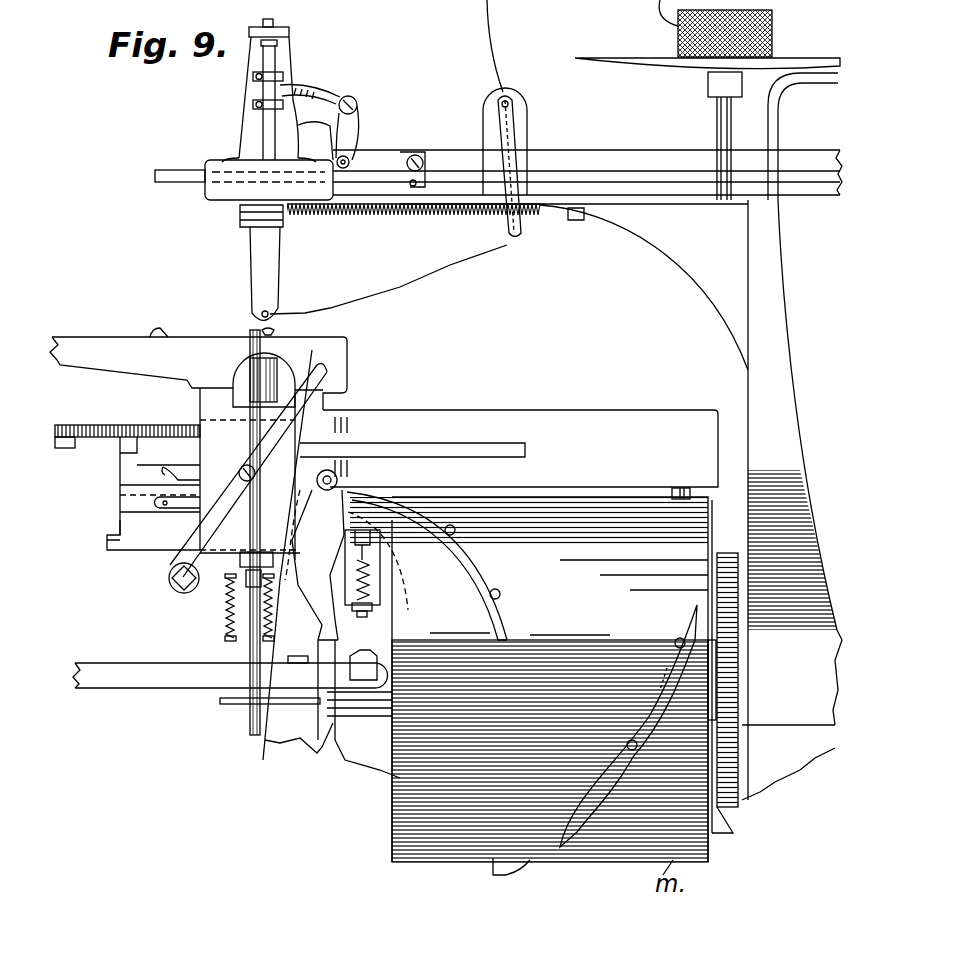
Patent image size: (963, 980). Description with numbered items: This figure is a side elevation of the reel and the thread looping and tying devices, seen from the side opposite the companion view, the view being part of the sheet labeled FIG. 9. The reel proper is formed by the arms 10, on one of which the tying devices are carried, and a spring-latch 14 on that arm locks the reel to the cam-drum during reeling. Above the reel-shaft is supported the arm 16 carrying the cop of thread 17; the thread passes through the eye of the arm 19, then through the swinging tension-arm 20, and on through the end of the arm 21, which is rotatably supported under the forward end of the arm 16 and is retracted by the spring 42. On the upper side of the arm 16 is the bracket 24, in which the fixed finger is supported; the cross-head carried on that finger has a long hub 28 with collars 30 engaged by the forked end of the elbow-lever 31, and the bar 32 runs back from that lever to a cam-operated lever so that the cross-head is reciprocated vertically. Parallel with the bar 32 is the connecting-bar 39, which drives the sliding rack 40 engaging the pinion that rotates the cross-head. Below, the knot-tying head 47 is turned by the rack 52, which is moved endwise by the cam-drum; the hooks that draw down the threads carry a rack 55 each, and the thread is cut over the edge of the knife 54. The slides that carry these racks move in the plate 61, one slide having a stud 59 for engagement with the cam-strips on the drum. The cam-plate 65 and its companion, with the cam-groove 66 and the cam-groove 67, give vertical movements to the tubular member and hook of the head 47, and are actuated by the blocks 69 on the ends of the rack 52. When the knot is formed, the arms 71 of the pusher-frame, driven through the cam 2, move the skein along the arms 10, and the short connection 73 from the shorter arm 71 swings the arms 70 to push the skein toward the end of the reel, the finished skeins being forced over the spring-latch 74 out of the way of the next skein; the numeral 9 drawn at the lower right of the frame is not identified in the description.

The cam 2 is at (740, 760).
The base 9 is at (805, 753).
The arms of the reel 10 is at (97, 328).
The spring-latch 14 is at (372, 577).
The arm 16 is at (665, 206).
The cop of thread 17 is at (773, 44).
The arm 19 is at (778, 138).
The swinging tension-arm 20 is at (505, 232).
The arm 21 is at (252, 262).
The bracket 24 is at (249, 78).
The hub 28 is at (262, 125).
The collars 30 is at (295, 90).
The elbow-lever 31 is at (322, 97).
The bar 32 is at (383, 157).
The connecting-bar 39 is at (660, 138).
The sliding rack 40 is at (244, 171).
The spring 42 is at (390, 216).
The knot-tying head 47 is at (270, 374).
The rack 52 is at (103, 417).
The knife 54 is at (121, 480).
The rack 55 is at (266, 622).
The stud 59 is at (670, 495).
The plate 61 is at (615, 418).
The cam-plate 65 is at (120, 525).
The cam-groove 66 is at (188, 459).
The cam-groove 67 is at (165, 506).
The blocks 69 is at (70, 441).
The swinging arms 70 is at (330, 383).
The arms of the pusher-frame 71 is at (216, 716).
The short connection 73 is at (238, 473).
The spring-latch 74 is at (151, 321).